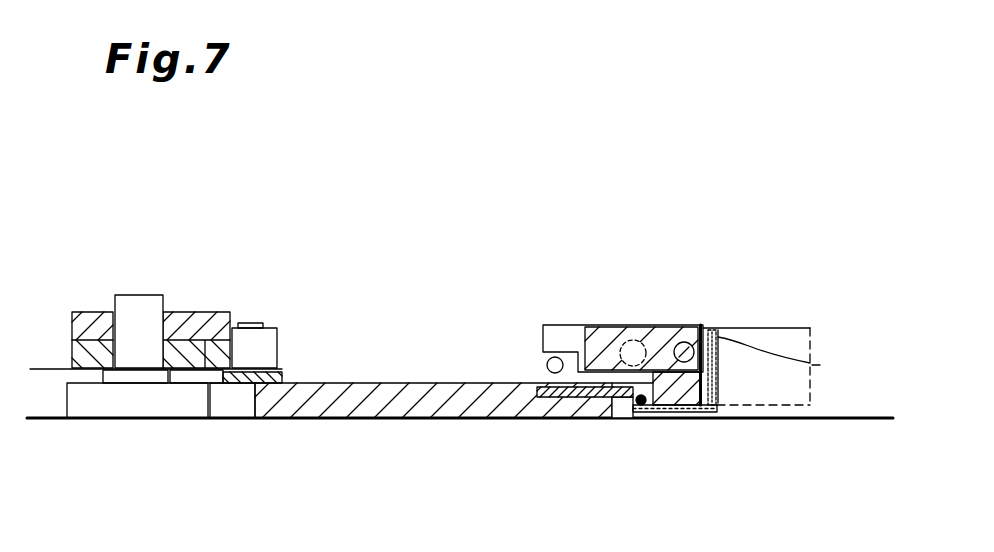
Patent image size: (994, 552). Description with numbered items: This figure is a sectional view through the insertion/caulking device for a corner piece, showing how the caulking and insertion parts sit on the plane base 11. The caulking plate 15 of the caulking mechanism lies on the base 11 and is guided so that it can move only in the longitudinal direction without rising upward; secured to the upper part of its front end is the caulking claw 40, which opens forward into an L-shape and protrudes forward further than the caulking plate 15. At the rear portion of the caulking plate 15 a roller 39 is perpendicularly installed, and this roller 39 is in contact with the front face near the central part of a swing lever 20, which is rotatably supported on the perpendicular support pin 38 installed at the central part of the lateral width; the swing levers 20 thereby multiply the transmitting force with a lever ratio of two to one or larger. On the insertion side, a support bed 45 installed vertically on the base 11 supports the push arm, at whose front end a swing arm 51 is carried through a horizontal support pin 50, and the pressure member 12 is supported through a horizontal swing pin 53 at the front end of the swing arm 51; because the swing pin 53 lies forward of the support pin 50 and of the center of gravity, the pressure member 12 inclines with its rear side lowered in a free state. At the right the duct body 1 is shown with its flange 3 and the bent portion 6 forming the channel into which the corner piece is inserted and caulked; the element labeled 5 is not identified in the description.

The duct body 1 is at (718, 360).
The flange 3 is at (673, 420).
The film 5 is at (650, 420).
The bent portion 6 is at (618, 420).
The base 11 is at (372, 432).
The pressure member 12 is at (695, 420).
The caulking plate 15 is at (272, 418).
The swing lever 20 is at (82, 355).
The support pin 38 is at (141, 307).
The roller 39 is at (267, 345).
The caulking claw 40 is at (557, 420).
The support bed 45 is at (546, 361).
The support pin 50 is at (645, 340).
The swing arm 51 is at (580, 323).
The swing pin 53 is at (692, 344).